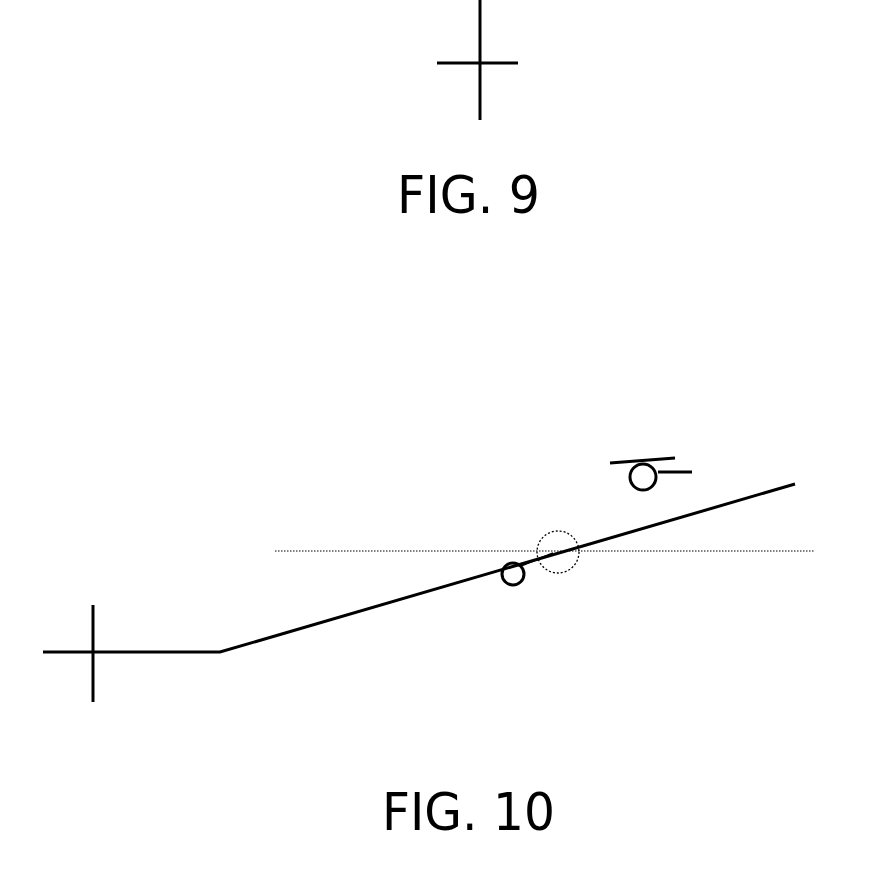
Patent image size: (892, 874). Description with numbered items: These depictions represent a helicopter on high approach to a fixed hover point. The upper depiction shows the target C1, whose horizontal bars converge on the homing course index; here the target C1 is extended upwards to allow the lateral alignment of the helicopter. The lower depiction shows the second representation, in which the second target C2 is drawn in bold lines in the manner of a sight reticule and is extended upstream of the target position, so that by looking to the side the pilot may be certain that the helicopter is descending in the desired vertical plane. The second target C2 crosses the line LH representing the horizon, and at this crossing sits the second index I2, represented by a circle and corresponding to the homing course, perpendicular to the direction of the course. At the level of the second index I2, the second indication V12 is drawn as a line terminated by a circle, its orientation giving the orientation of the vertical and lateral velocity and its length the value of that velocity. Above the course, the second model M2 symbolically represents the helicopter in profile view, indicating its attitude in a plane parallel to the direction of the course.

In FIG. 9, the target C1 is at (431, 60).
In FIG. 10, the second target C2 is at (336, 642).
In FIG. 10, the first line LH is at (415, 548).
In FIG. 10, the second index I2 is at (543, 535).
In FIG. 10, the second indication V12 is at (518, 587).
In FIG. 10, the second model M2 is at (658, 458).